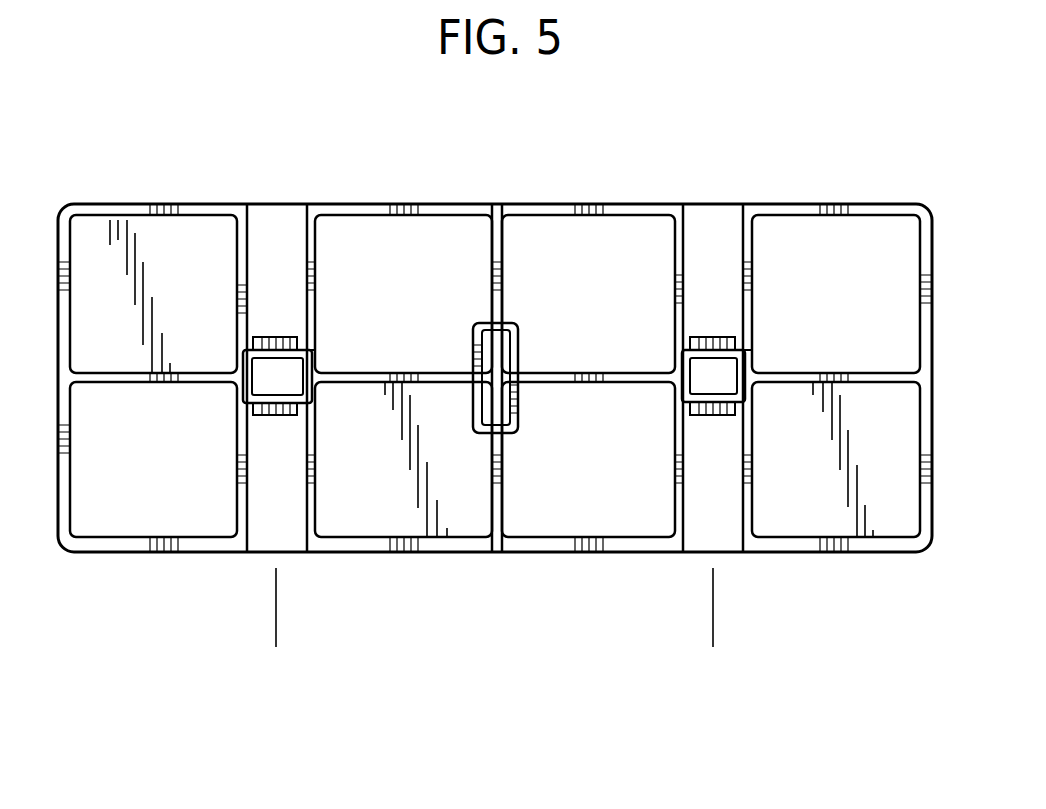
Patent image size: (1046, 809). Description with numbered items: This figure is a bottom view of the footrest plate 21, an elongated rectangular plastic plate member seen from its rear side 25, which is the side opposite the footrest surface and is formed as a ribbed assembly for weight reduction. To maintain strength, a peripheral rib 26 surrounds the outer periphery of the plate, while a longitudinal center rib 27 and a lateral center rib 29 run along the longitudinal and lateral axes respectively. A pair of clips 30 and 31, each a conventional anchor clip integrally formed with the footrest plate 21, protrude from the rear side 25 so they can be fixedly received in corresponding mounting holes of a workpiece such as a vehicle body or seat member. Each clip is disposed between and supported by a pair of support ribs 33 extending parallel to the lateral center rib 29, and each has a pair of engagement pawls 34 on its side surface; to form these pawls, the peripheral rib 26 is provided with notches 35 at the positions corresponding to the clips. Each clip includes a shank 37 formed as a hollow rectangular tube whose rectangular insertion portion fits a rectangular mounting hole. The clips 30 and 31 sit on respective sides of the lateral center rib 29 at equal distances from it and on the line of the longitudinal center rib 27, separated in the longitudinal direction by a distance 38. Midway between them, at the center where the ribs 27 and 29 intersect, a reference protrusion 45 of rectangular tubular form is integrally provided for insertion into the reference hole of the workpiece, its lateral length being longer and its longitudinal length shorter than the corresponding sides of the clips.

The footrest plate 21 is at (792, 190).
The rear side 25 is at (452, 303).
The peripheral rib 26 is at (190, 210).
The longitudinal center rib 27 is at (95, 382).
The lateral center rib 29 is at (496, 250).
The clip 30 is at (326, 355).
The clip 31 is at (765, 355).
The support rib 33 is at (243, 249).
The engagement pawl 34 is at (286, 337).
The notch 35 is at (277, 236).
The shank 37 is at (242, 393).
The distance 38 is at (711, 638).
The reference protrusion 45 is at (513, 350).